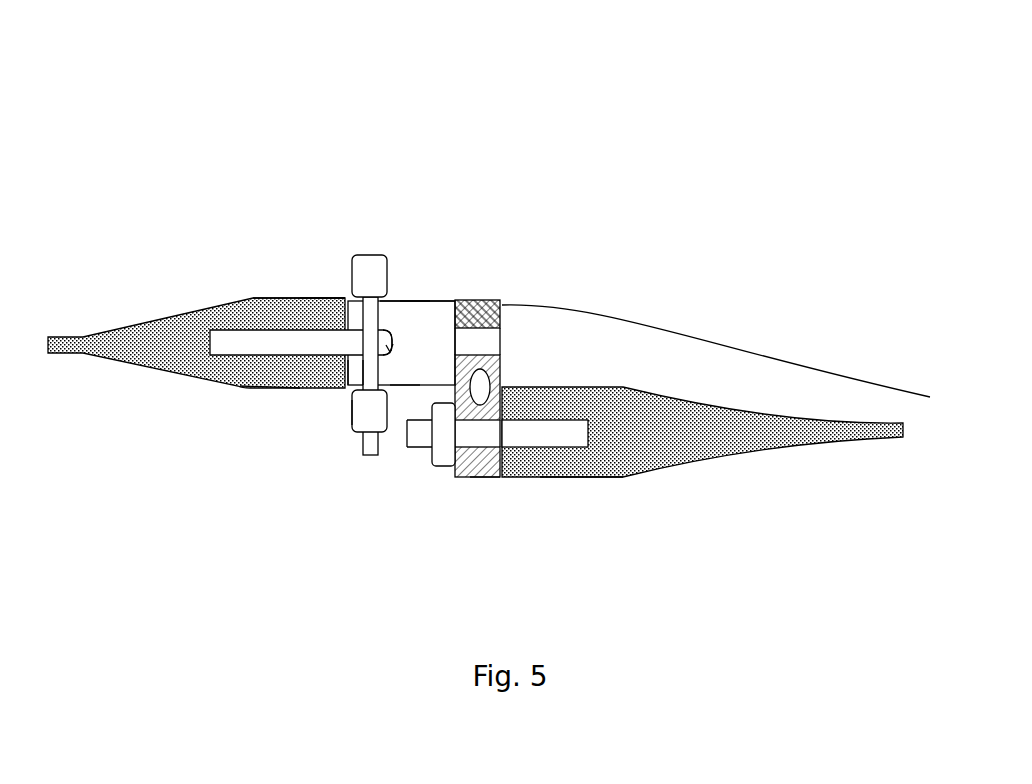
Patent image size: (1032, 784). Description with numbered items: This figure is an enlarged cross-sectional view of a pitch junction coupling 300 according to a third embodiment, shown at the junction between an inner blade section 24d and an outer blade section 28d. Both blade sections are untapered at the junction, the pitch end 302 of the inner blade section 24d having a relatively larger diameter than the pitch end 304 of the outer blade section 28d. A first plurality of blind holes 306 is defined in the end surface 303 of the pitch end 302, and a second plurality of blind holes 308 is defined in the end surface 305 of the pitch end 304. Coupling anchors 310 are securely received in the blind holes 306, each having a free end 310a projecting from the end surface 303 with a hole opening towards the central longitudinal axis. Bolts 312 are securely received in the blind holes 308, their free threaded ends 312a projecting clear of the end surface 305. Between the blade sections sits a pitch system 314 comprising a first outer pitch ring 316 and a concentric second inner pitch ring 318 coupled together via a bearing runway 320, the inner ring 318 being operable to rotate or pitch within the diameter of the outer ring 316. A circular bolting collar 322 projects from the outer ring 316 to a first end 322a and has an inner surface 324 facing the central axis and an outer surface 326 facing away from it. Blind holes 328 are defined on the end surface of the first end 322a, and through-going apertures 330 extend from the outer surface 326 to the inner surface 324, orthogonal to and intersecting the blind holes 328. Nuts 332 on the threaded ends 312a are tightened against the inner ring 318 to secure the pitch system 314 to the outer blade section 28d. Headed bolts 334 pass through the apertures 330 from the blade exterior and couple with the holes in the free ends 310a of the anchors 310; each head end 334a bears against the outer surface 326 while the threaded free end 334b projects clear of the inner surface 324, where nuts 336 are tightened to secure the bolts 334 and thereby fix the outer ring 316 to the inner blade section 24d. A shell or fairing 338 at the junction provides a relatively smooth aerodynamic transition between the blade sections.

The pitch junction coupling 300 is at (233, 103).
The pitch end of the inner blade section 302 is at (304, 275).
The end surface of the pitch end of the inner blade section 303 is at (345, 308).
The pitch end of the outer blade section 304 is at (580, 537).
The end surface of the pitch end of the outer blade section 305 is at (503, 475).
The first plurality of blind holes 306 is at (260, 357).
The second plurality of blind holes 308 is at (568, 443).
The coupling anchors 310 is at (233, 337).
The free end of the anchors 310a is at (392, 350).
The bolts 312 is at (547, 437).
The free threaded end of the bolts 312a is at (417, 435).
The pitch system 314 is at (503, 297).
The first outer pitch ring 316 is at (503, 298).
The second inner pitch ring 318 is at (500, 467).
The bearing runway 320 is at (490, 387).
The bolting collar 322 is at (447, 294).
The first end of the bolting collar 322a is at (323, 360).
The inner surface of the bolting collar 324 is at (403, 390).
The outer surface of the bolting collar 326 is at (478, 297).
The blind holes of the bolting collar 328 is at (427, 313).
The through-going apertures 330 is at (365, 367).
The nuts 332 is at (437, 453).
The headed bolts 334 is at (385, 318).
The head end of the headed bolts 334a is at (375, 263).
The threaded free end of the headed bolts 334b is at (363, 455).
The nuts on the headed bolts 336 is at (356, 416).
The shell or fairing 338 is at (812, 354).
The inner blade section 24d is at (173, 357).
The outer blade section 28d is at (698, 445).